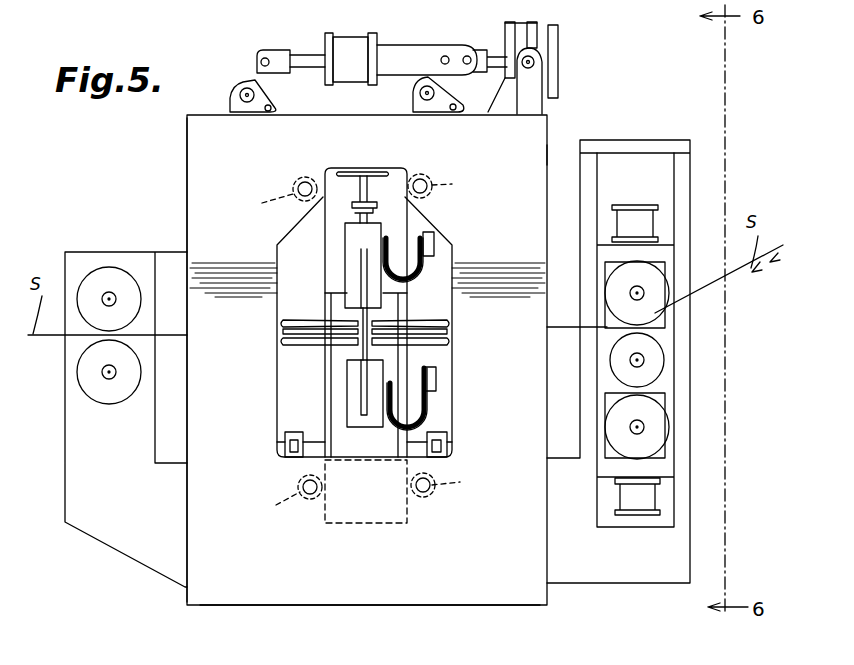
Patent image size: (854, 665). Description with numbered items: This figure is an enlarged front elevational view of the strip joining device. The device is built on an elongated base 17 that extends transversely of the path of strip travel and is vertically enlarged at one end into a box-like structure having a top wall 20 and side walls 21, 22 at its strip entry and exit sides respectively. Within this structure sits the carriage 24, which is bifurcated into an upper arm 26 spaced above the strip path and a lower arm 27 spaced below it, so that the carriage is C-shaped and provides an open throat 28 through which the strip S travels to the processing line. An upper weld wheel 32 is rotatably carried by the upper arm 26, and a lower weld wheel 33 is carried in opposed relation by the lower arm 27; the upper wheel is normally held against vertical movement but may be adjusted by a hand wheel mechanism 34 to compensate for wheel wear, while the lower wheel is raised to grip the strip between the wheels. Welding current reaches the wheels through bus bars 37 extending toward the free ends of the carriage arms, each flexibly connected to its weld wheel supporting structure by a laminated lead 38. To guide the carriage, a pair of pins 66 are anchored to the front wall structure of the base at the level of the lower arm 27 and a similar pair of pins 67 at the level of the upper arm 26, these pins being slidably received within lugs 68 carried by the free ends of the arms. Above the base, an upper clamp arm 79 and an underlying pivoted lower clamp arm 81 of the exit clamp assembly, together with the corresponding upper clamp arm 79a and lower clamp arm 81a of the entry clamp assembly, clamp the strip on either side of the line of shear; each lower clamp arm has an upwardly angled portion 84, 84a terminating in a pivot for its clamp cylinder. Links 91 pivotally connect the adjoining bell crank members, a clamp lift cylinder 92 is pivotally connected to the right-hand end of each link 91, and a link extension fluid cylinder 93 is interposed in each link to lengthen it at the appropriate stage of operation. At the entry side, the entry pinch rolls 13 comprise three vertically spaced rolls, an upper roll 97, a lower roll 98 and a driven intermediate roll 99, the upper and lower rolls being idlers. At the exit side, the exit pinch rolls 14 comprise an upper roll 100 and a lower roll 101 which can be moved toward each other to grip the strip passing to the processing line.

The entry pinch rolls 13 is at (641, 121).
The exit pinch rolls 14 is at (88, 233).
The base 17 is at (289, 614).
The top wall 20 is at (186, 112).
The side wall 21 is at (547, 158).
The side wall 22 is at (186, 154).
The carriage 24 is at (312, 408).
The upper arm 26 is at (330, 236).
The lower arm 27 is at (350, 459).
The open throat 28 is at (331, 292).
The upper weld wheel 32 is at (369, 322).
The lower weld wheel 33 is at (361, 371).
The hand wheel mechanism 34 is at (349, 171).
The bus bars 37 is at (432, 243).
The laminated lead 38 is at (430, 270).
The pins 66 is at (310, 492).
The pins 67 is at (305, 182).
The lugs 68 is at (363, 347).
The upper clamp arm 79 is at (282, 322).
The upper clamp arm 79a is at (449, 324).
The lower clamp arm 81 is at (284, 341).
The lower clamp arm 81a is at (448, 343).
The upwardly angled portion 84 is at (243, 68).
The upwardly angled portion 84a is at (422, 80).
The links 91 is at (418, 55).
The clamp lift cylinder 92 is at (548, 42).
The link extension fluid cylinder 93 is at (362, 52).
The upper roll 97 is at (656, 290).
The lower roll 98 is at (656, 432).
The intermediate roll 99 is at (652, 364).
The upper roll 100 is at (108, 277).
The lower roll 101 is at (110, 402).